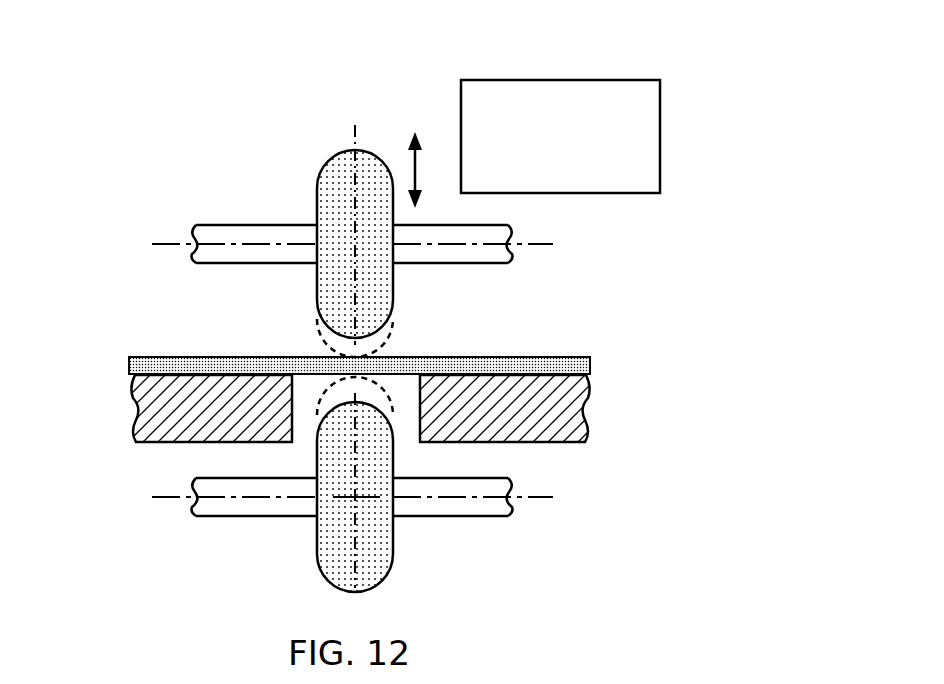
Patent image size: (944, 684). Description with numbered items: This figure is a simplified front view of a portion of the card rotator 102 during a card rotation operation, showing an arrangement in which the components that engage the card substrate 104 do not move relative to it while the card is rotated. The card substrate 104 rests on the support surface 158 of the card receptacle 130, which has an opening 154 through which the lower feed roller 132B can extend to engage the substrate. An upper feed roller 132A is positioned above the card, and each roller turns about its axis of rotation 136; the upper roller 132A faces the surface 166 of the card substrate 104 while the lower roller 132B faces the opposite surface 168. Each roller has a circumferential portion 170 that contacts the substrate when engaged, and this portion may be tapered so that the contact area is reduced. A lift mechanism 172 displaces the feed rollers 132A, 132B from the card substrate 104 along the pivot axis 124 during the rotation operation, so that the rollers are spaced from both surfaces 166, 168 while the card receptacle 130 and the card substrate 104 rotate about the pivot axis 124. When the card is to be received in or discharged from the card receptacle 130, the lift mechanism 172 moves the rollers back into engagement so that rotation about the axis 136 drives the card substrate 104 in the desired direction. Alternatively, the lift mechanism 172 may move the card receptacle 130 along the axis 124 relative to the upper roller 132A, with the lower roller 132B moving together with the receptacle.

The card rotator 102 is at (136, 107).
The card substrate 104 is at (555, 357).
The pivot axis 124 is at (353, 218).
The card receptacle 130 is at (567, 413).
The feed roller 132A is at (341, 160).
The feed roller 132B is at (330, 562).
The axis of rotation 136 is at (536, 245).
The opening 154 is at (397, 390).
The support surface 158 is at (486, 358).
The surface 166 is at (164, 338).
The surface 168 is at (148, 392).
The circumferential portion 170 is at (327, 323).
The lift mechanism 172 is at (592, 80).